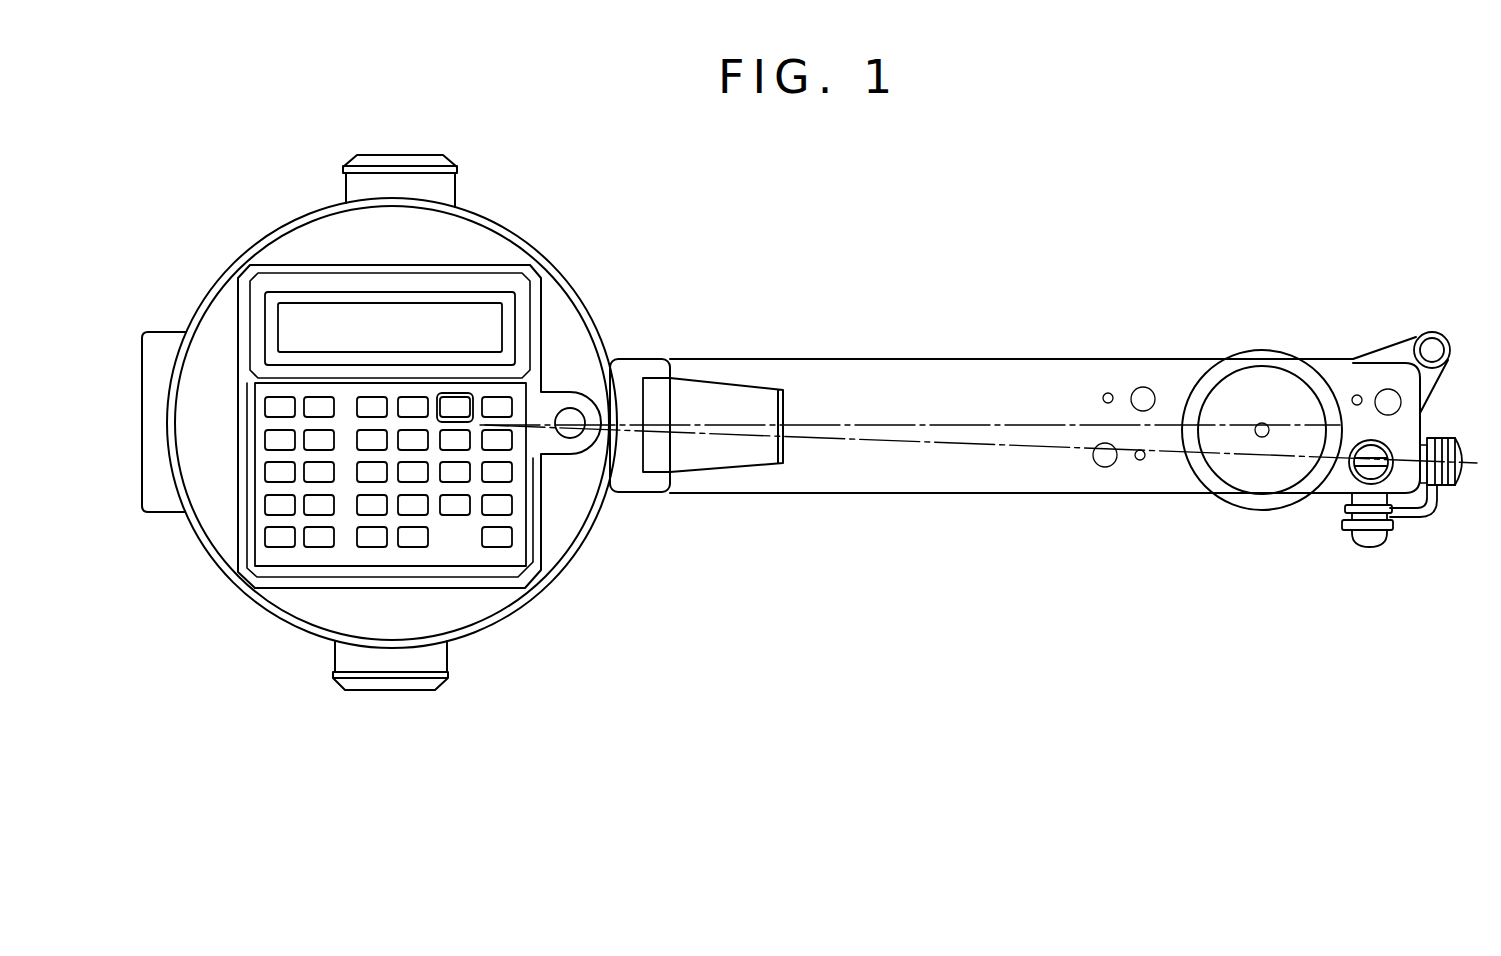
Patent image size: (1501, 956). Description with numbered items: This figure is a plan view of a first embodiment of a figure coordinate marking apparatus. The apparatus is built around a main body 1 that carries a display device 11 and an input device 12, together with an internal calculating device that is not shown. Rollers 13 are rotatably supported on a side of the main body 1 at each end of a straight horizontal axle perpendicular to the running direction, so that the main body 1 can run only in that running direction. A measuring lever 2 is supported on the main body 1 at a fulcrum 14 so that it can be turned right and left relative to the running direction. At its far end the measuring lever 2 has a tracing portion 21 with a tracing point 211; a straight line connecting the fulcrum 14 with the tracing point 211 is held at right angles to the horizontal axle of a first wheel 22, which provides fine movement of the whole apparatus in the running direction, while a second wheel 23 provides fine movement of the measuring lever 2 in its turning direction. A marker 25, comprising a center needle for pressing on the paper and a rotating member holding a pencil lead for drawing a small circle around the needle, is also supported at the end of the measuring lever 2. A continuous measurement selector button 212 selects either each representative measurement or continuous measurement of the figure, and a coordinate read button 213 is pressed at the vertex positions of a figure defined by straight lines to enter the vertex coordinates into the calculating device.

The main body 1 is at (575, 560).
The display device 11 is at (481, 317).
The input device 12 is at (323, 552).
The rollers 13 is at (447, 159).
The fulcrum 14 is at (572, 415).
The measuring lever 2 is at (945, 495).
The tracing portion 21 is at (1240, 373).
The tracing point 211 is at (1257, 435).
The continuous measurement selector button 212 is at (1380, 395).
The coordinate read button 213 is at (1353, 480).
The first wheel 22 is at (1350, 547).
The second wheel 23 is at (1455, 487).
The marker 25 is at (1436, 332).